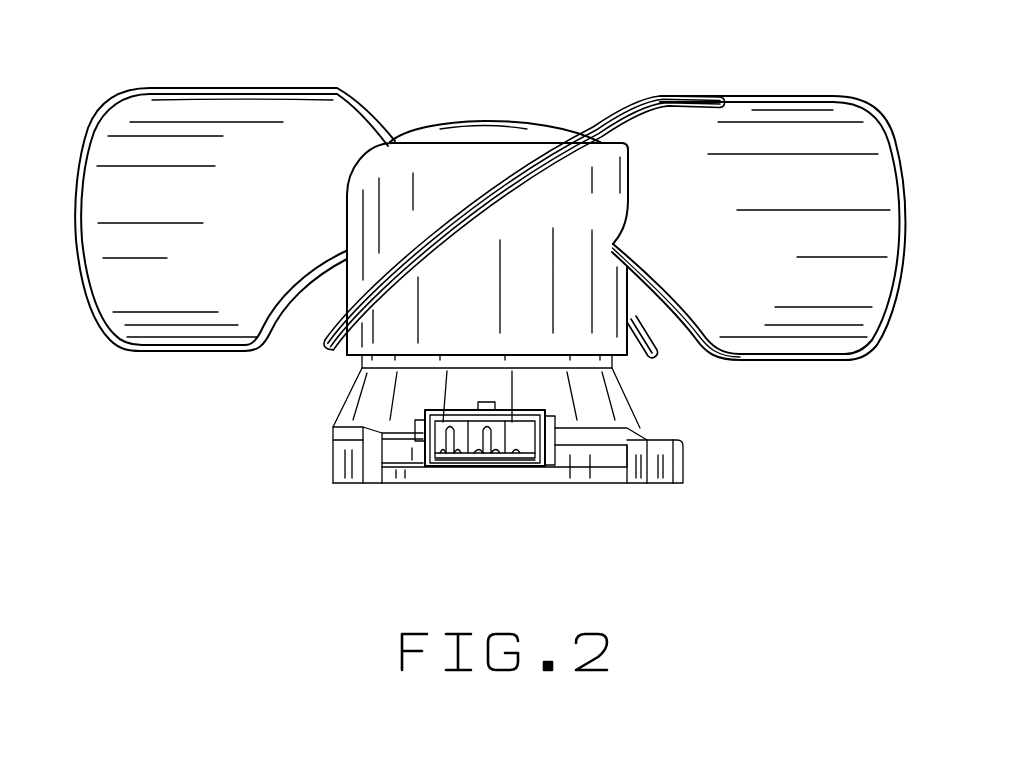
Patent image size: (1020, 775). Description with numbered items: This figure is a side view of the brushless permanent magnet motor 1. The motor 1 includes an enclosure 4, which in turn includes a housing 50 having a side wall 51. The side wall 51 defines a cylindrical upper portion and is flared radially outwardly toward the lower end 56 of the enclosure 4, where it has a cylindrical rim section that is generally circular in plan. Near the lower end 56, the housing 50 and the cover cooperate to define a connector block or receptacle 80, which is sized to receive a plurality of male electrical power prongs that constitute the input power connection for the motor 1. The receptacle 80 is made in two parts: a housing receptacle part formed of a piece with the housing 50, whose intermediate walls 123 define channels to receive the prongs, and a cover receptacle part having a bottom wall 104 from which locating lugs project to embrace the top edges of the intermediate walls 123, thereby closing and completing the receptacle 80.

The brushless permanent magnet motor 1 is at (610, 78).
The enclosure 4 is at (488, 113).
The housing 50 is at (561, 479).
The side wall 51 is at (627, 400).
The lower end 56 is at (607, 465).
The receptacle 80 is at (433, 407).
The bottom wall 104 is at (497, 475).
The intermediate walls 123 is at (467, 452).